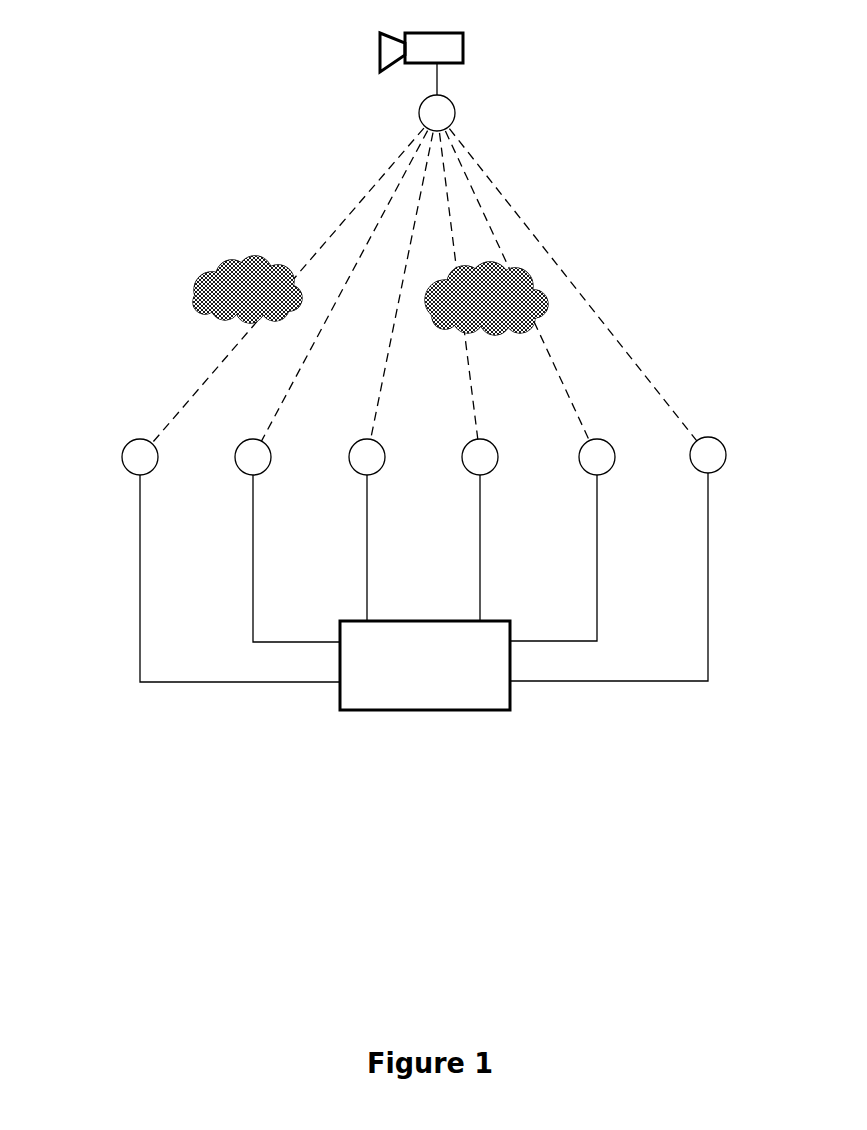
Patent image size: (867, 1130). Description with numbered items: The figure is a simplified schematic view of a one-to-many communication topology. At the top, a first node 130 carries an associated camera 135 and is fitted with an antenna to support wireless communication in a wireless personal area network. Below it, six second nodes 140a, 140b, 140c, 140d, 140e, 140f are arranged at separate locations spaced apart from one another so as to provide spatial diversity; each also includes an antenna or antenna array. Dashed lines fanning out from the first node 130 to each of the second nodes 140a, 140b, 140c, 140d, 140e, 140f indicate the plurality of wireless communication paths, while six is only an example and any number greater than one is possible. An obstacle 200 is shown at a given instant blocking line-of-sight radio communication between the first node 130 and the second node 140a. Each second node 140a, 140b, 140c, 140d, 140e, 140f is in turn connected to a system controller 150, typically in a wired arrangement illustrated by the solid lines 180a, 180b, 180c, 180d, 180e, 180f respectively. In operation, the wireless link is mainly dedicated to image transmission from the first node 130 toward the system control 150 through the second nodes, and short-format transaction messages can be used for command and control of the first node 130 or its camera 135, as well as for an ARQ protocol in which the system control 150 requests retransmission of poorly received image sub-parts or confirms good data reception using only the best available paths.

The first node 130 is at (456, 113).
The camera 135 is at (375, 55).
The obstacle 200 is at (190, 272).
The second node 140a is at (133, 477).
The second node 140b is at (246, 477).
The second node 140c is at (360, 477).
The second node 140d is at (473, 477).
The second node 140e is at (590, 477).
The second node 140f is at (701, 475).
The solid line 180a is at (140, 613).
The solid line 180b is at (253, 613).
The solid line 180c is at (367, 613).
The solid line 180d is at (480, 613).
The solid line 180e is at (597, 613).
The solid line 180f is at (708, 613).
The system controller 150 is at (345, 712).